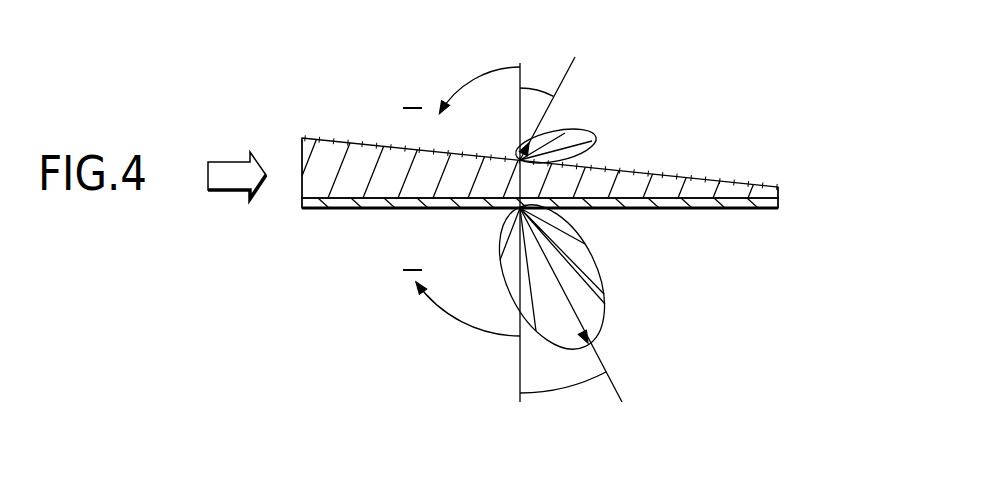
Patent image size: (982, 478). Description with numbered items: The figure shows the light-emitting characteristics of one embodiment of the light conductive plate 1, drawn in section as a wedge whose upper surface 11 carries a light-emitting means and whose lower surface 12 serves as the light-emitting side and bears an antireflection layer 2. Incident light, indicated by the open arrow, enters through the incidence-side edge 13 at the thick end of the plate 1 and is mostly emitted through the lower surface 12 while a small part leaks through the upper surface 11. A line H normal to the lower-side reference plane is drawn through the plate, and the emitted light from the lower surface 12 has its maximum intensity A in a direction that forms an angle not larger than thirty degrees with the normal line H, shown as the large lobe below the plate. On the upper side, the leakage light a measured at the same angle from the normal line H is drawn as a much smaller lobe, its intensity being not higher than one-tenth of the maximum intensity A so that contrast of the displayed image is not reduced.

The light conductive plate 1 is at (536, 176).
The antireflection layer 2 is at (780, 207).
The upper surface 11 is at (335, 138).
The lower surface 12 is at (322, 205).
The incidence-side edge 13 is at (302, 176).
The leakage light a is at (516, 156).
The maximum intensity of emitted light A is at (557, 270).
The normal line H is at (520, 357).